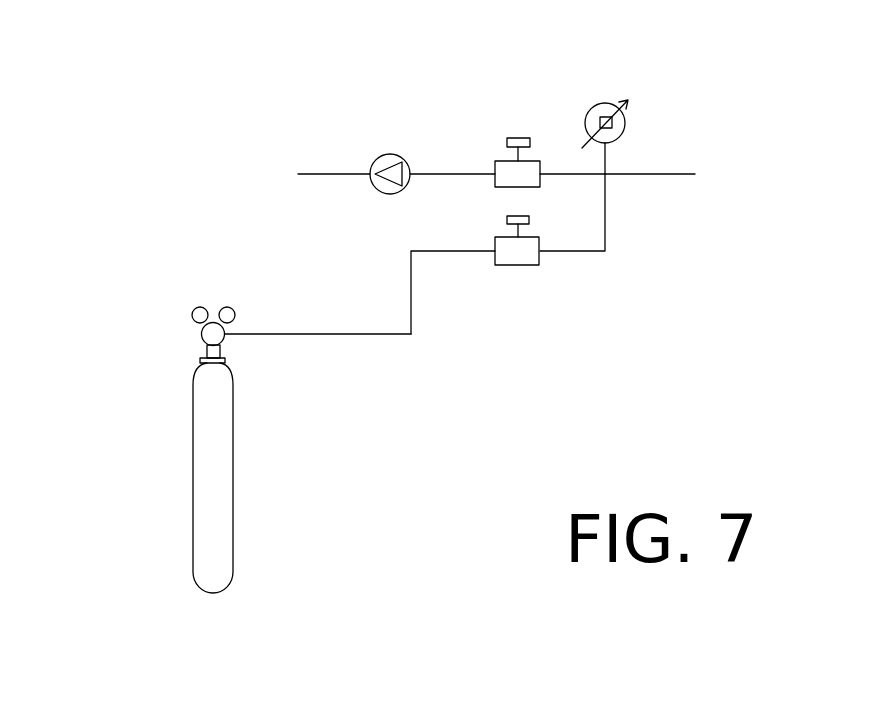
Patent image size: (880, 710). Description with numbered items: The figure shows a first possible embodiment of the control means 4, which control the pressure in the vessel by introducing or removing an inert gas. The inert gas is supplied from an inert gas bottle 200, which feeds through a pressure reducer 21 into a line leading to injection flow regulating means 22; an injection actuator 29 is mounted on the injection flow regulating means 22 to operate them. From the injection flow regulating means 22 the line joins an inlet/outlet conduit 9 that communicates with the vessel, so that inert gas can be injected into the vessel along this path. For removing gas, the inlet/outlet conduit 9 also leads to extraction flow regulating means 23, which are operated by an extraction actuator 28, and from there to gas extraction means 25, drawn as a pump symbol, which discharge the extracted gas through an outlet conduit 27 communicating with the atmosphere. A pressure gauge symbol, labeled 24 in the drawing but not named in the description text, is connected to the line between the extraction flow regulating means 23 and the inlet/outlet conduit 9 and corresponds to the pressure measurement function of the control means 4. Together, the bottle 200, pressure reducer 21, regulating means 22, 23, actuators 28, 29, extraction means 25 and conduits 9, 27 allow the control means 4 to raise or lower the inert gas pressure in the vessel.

The control means 4 is at (165, 70).
The outlet conduit 27 is at (282, 173).
The gas extraction means 25 is at (380, 147).
The extraction flow regulating means 23 is at (498, 157).
The extraction actuator 28 is at (517, 137).
The pressure sensor 24 is at (637, 122).
The inlet/outlet conduit 9 is at (672, 175).
The injection flow regulating means 22 is at (518, 270).
The injection actuator 29 is at (502, 218).
The pressure reducer 21 is at (192, 335).
The inert gas bottle 200 is at (247, 492).